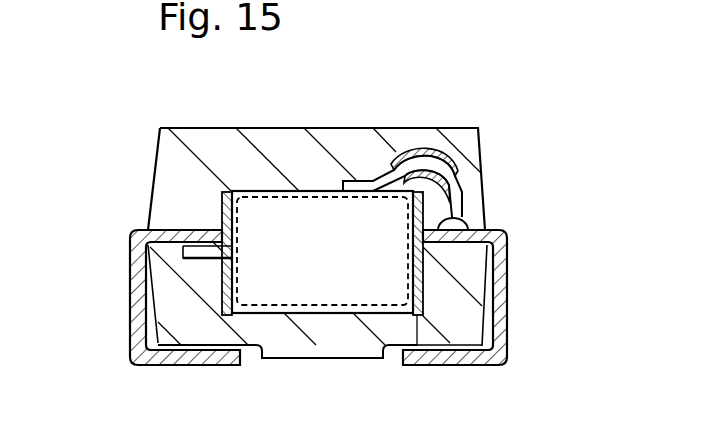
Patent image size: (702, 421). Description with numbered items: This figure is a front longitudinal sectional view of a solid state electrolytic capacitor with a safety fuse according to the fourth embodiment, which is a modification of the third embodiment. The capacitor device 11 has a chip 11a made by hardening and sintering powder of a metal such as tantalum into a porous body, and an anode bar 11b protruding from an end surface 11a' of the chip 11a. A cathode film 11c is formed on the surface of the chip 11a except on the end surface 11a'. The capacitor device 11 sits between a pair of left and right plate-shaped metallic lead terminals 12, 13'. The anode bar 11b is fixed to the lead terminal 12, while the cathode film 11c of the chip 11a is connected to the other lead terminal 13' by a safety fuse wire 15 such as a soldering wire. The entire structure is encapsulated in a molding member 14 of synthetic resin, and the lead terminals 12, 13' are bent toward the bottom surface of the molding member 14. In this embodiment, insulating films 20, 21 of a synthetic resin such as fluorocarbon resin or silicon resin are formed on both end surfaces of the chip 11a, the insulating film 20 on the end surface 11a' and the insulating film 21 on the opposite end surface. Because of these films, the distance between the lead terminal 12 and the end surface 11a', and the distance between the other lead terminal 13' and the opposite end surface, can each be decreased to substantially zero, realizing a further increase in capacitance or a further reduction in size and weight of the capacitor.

The capacitor device 11 is at (269, 229).
The chip 11a is at (322, 183).
The end surface 11a' is at (159, 226).
The anode bar 11b is at (188, 250).
The cathode film 11c is at (327, 191).
The lead terminal 12 is at (130, 333).
The other lead terminal 13' is at (495, 296).
The molding member 14 is at (197, 128).
The safety fuse wire 15 is at (462, 170).
The insulating film 20 is at (220, 228).
The insulating film 21 is at (423, 293).